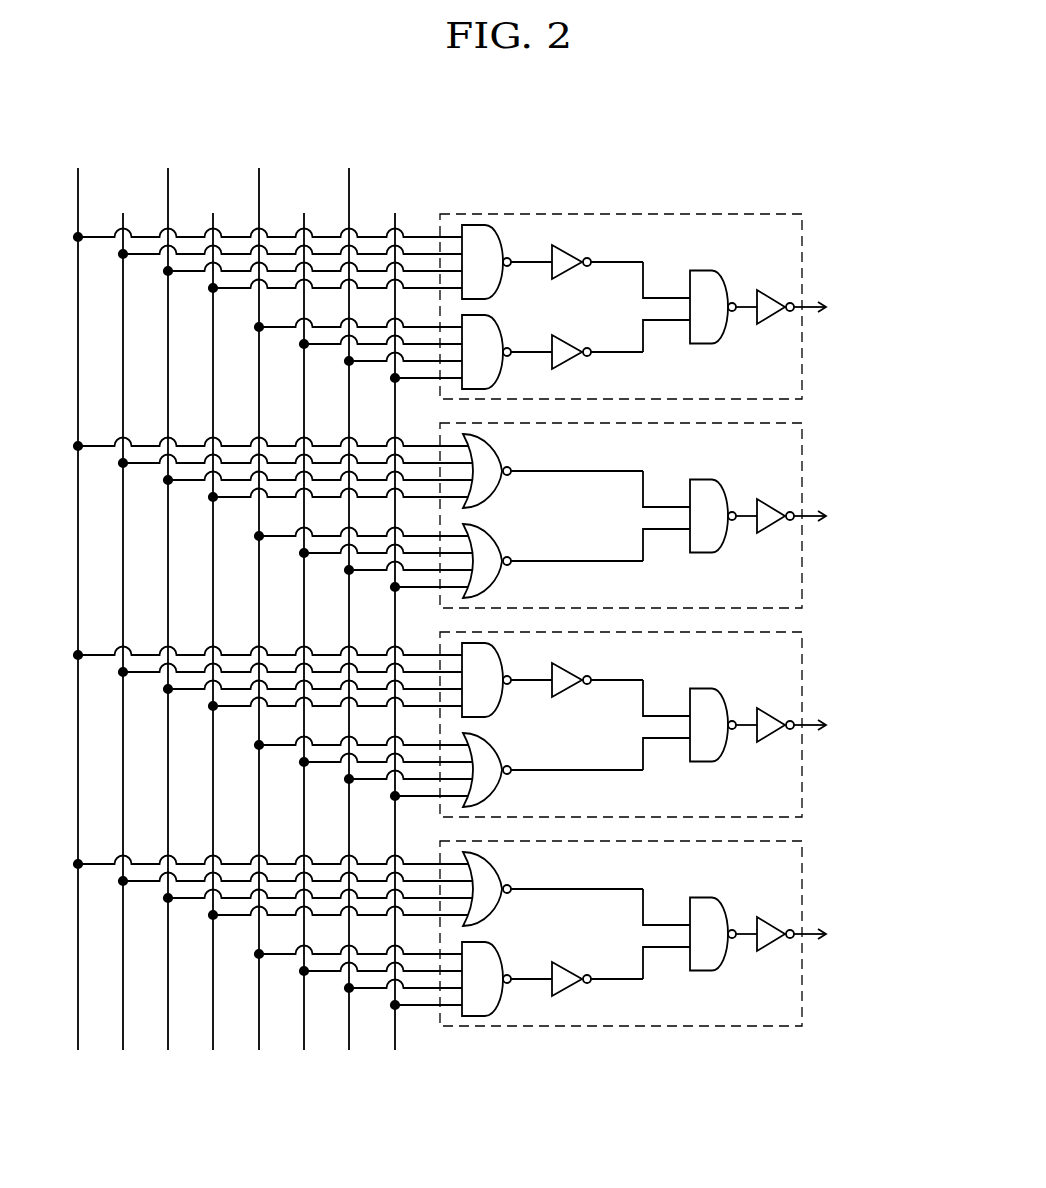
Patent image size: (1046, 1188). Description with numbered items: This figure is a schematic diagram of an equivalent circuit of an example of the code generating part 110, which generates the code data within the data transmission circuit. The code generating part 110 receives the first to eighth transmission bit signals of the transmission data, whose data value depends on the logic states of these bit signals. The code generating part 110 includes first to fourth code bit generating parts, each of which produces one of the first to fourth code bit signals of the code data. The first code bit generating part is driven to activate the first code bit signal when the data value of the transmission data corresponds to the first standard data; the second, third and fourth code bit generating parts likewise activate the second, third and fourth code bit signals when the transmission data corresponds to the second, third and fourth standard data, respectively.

The code generating part 110 is at (880, 188).